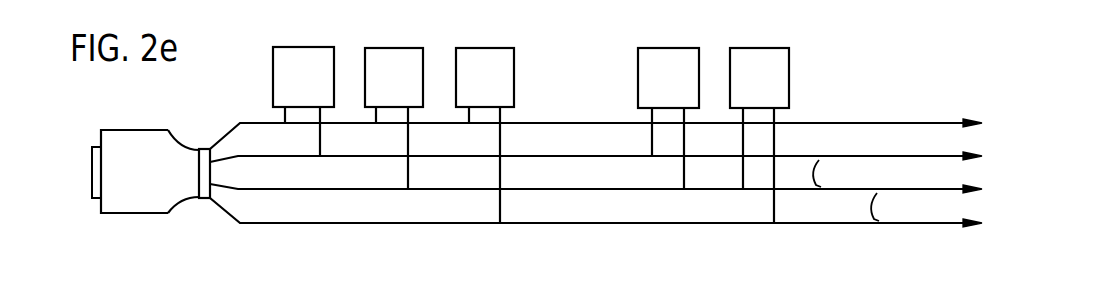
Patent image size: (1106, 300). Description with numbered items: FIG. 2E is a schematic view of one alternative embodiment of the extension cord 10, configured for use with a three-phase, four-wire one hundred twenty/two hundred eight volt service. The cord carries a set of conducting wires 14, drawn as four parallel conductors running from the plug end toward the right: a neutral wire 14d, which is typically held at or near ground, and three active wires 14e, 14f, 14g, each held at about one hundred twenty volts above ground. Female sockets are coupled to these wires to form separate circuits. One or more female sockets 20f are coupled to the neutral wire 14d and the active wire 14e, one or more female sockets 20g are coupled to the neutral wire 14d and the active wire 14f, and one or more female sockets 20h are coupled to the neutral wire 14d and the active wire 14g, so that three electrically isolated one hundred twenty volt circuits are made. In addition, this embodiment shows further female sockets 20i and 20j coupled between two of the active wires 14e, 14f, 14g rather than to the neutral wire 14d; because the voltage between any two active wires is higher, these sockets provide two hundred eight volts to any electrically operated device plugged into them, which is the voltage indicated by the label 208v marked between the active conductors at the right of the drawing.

The extension cord 10 is at (843, 109).
The conducting wires 14 is at (621, 157).
The neutral wire 14d is at (620, 130).
The active wire 14e is at (620, 157).
The active wire 14f is at (621, 190).
The active wire 14g is at (620, 217).
The female socket 20f is at (303, 47).
The female socket 20g is at (391, 48).
The female socket 20h is at (483, 48).
The female socket 20i is at (678, 101).
The female socket 20j is at (768, 118).
The conductor spacing 208v is at (873, 191).